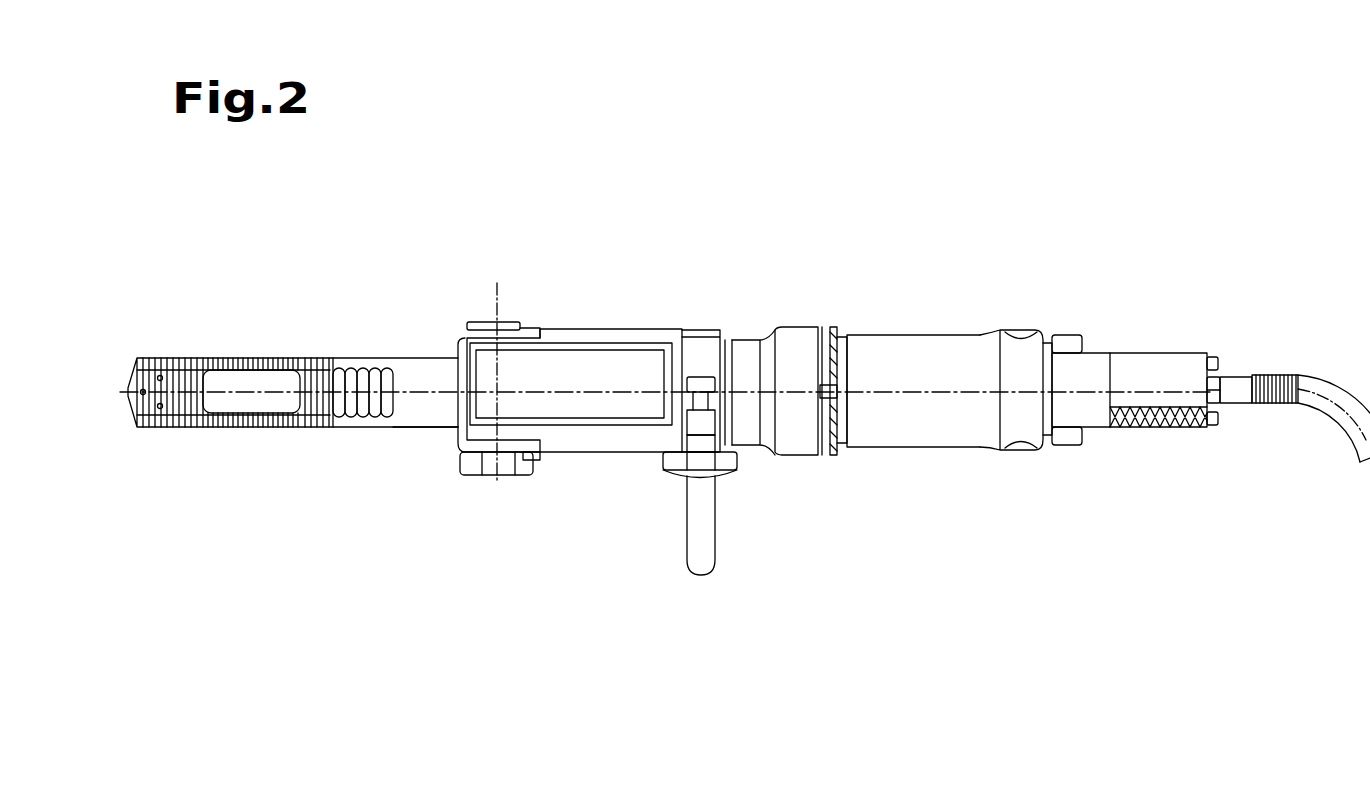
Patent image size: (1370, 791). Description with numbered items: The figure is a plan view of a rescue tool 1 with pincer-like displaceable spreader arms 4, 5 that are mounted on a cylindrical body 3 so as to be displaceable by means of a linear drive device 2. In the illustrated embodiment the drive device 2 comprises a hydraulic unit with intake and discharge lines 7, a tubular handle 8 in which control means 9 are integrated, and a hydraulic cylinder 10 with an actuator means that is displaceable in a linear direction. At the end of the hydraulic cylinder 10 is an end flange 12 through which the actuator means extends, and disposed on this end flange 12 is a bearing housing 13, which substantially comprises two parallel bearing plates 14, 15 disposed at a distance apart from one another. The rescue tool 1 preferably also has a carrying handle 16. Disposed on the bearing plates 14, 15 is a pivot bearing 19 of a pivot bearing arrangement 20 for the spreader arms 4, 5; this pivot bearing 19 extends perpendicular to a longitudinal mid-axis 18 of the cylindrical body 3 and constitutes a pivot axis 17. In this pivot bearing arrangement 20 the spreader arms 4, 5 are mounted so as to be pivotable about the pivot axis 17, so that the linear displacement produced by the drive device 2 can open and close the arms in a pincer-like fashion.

The rescue tool 1 is at (753, 190).
The linear drive device 2 is at (866, 320).
The cylindrical body 3 is at (855, 480).
The spreader arm 4 is at (417, 437).
The spreader arm 5 is at (415, 360).
The intake and discharge lines 7 is at (1333, 413).
The tubular handle 8 is at (1132, 450).
The control means 9 is at (1067, 350).
The hydraulic cylinder 10 is at (888, 430).
The end flange 12 is at (692, 353).
The bearing housing 13 is at (582, 508).
The bearing plate 14 is at (608, 433).
The bearing plate 15 is at (598, 343).
The carrying handle 16 is at (697, 557).
The pivot axis 17 is at (495, 486).
The longitudinal mid-axis 18 is at (872, 387).
The pivot bearing 19 is at (533, 330).
The pivot bearing arrangement 20 is at (503, 487).